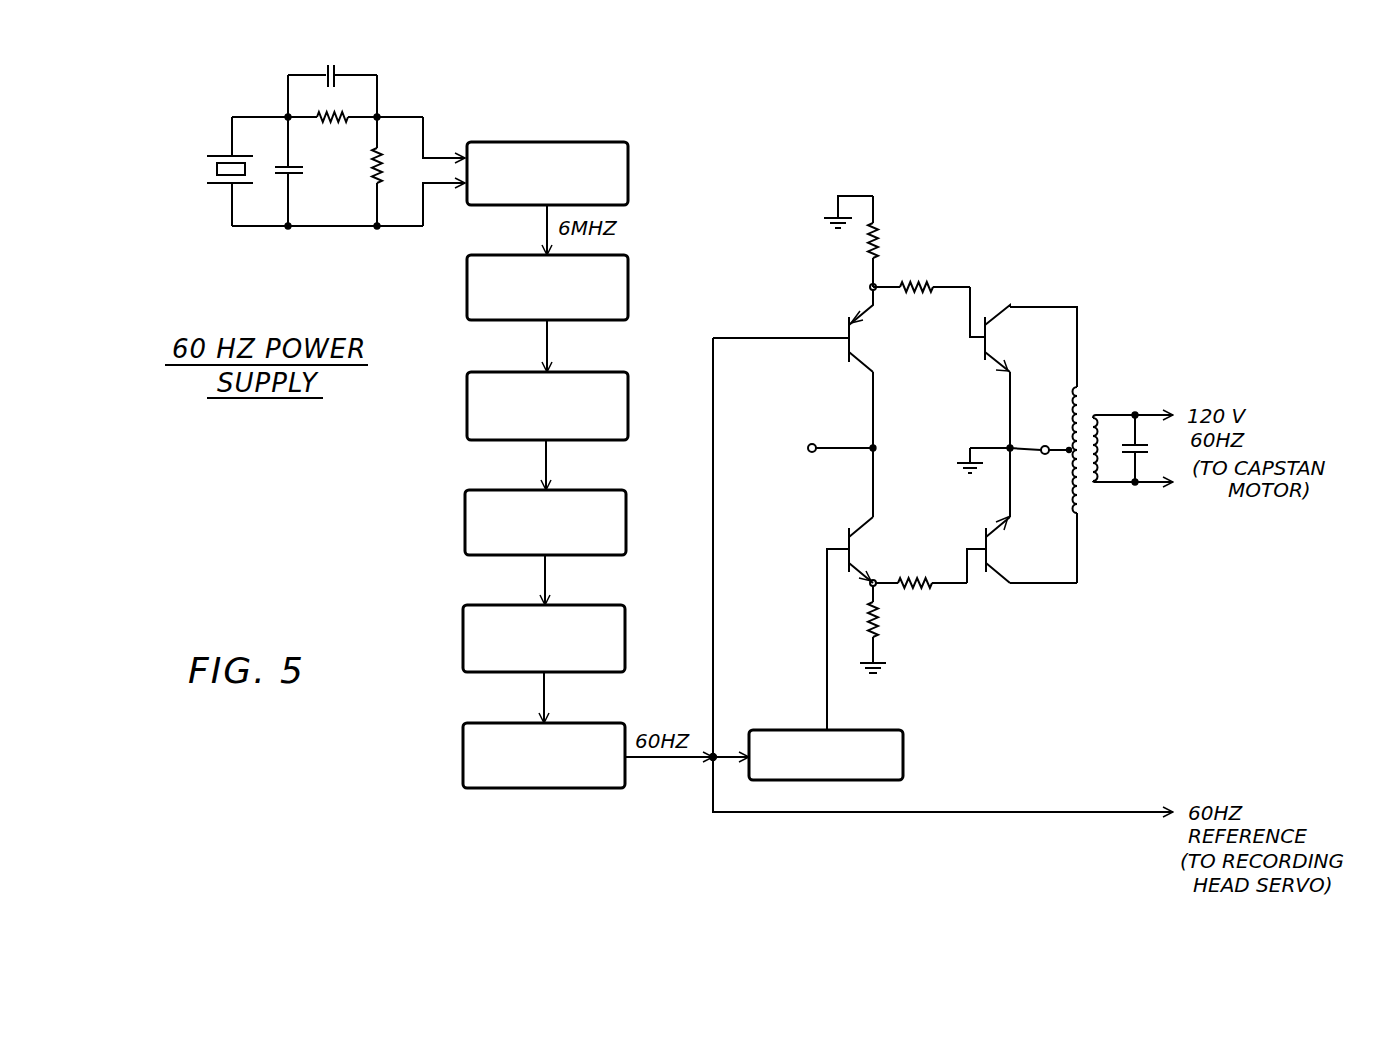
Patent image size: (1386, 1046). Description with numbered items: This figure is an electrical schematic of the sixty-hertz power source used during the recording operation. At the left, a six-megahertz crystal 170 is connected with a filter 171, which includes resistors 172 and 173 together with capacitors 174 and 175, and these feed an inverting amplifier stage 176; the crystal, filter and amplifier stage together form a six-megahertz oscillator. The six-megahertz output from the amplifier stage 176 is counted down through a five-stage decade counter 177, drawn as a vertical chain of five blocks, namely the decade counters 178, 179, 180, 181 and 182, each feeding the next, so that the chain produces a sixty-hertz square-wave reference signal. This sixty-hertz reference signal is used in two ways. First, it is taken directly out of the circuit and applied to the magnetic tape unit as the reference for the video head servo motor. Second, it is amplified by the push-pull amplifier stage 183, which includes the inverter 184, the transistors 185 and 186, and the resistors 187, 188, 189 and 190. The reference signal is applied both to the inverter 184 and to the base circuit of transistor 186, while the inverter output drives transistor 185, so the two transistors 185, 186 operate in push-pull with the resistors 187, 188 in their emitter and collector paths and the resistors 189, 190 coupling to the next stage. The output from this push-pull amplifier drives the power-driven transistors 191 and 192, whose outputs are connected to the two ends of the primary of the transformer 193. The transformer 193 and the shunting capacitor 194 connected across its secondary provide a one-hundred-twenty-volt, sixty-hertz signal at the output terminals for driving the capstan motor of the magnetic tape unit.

The crystal 170 is at (210, 172).
The filter 171 is at (356, 182).
The resistor 172 is at (328, 122).
The resistor 173 is at (407, 143).
The capacitor 174 is at (307, 175).
The capacitor 175 is at (337, 63).
The inverting amplifier stage 176 is at (572, 140).
The five-stage decade counter 177 is at (427, 471).
The decade counter 178 is at (630, 290).
The decade counter 179 is at (630, 390).
The decade counter 180 is at (628, 518).
The decade counter 181 is at (627, 632).
The decade counter 182 is at (605, 722).
The push-pull amplifier stage 183 is at (799, 501).
The inverter 184 is at (860, 729).
The transistor 185 is at (855, 552).
The transistor 186 is at (860, 343).
The resistor 187 is at (880, 622).
The resistor 188 is at (880, 243).
The resistor 189 is at (915, 590).
The resistor 190 is at (916, 283).
The power-driven transistor 191 is at (995, 345).
The power-driven transistor 192 is at (990, 553).
The transformer 193 is at (1145, 389).
The shunting capacitor 194 is at (1165, 459).